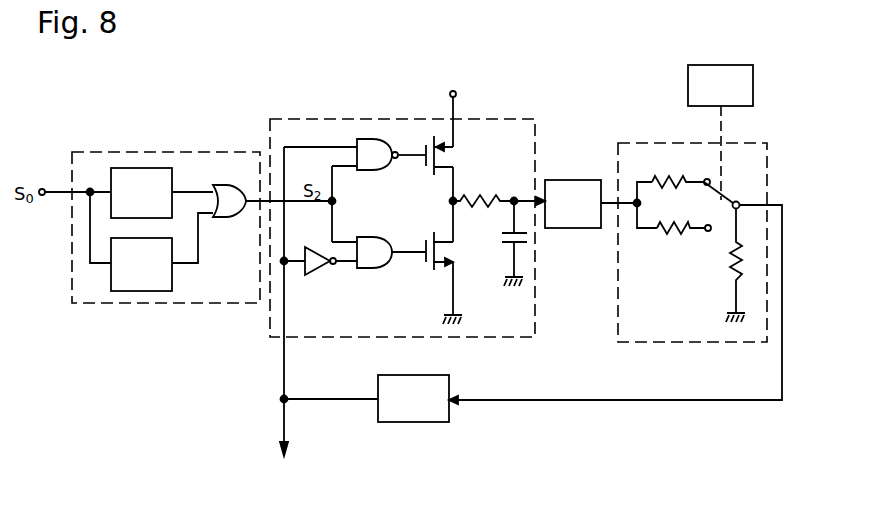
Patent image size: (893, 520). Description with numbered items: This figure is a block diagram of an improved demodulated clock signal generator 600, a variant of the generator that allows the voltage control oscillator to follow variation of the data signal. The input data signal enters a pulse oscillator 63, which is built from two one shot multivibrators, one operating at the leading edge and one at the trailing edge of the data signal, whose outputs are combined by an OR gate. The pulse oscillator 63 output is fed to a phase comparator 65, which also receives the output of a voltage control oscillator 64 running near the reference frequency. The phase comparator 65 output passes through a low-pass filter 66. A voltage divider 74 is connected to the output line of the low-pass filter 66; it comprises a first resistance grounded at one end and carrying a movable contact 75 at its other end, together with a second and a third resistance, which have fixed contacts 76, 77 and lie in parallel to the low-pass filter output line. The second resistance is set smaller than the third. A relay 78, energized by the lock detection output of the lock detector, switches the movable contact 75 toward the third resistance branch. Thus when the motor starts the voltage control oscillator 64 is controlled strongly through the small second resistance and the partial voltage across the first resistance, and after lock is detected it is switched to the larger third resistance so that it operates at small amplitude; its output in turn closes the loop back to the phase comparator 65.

The pulse oscillator 63 is at (118, 303).
The improved demodulated clock signal generator 600 is at (238, 325).
The phase comparator 65 is at (513, 337).
The low-pass filter 66 is at (577, 180).
The voltage divider 74 is at (615, 257).
The movable contact 75 is at (737, 201).
The fixed contact 76 is at (709, 179).
The fixed contact 77 is at (697, 247).
The relay 78 is at (688, 82).
The voltage control oscillator 64 is at (422, 422).